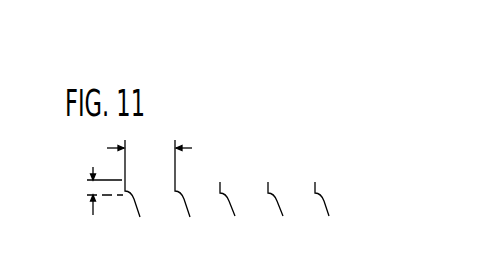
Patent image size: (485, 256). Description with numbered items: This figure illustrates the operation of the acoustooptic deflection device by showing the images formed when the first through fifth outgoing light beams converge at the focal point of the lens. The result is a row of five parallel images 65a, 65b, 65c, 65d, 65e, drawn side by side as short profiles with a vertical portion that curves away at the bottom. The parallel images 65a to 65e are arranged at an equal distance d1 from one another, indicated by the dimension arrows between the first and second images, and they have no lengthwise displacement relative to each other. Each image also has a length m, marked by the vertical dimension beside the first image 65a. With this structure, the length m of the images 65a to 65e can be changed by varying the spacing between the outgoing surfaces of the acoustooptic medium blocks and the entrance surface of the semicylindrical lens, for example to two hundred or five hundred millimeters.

The parallel image 65a is at (137, 192).
The parallel image 65b is at (189, 192).
The parallel image 65c is at (239, 213).
The parallel image 65d is at (290, 213).
The parallel image 65e is at (338, 213).
The length of the images m is at (94, 191).
The equal distance d1 is at (149, 146).